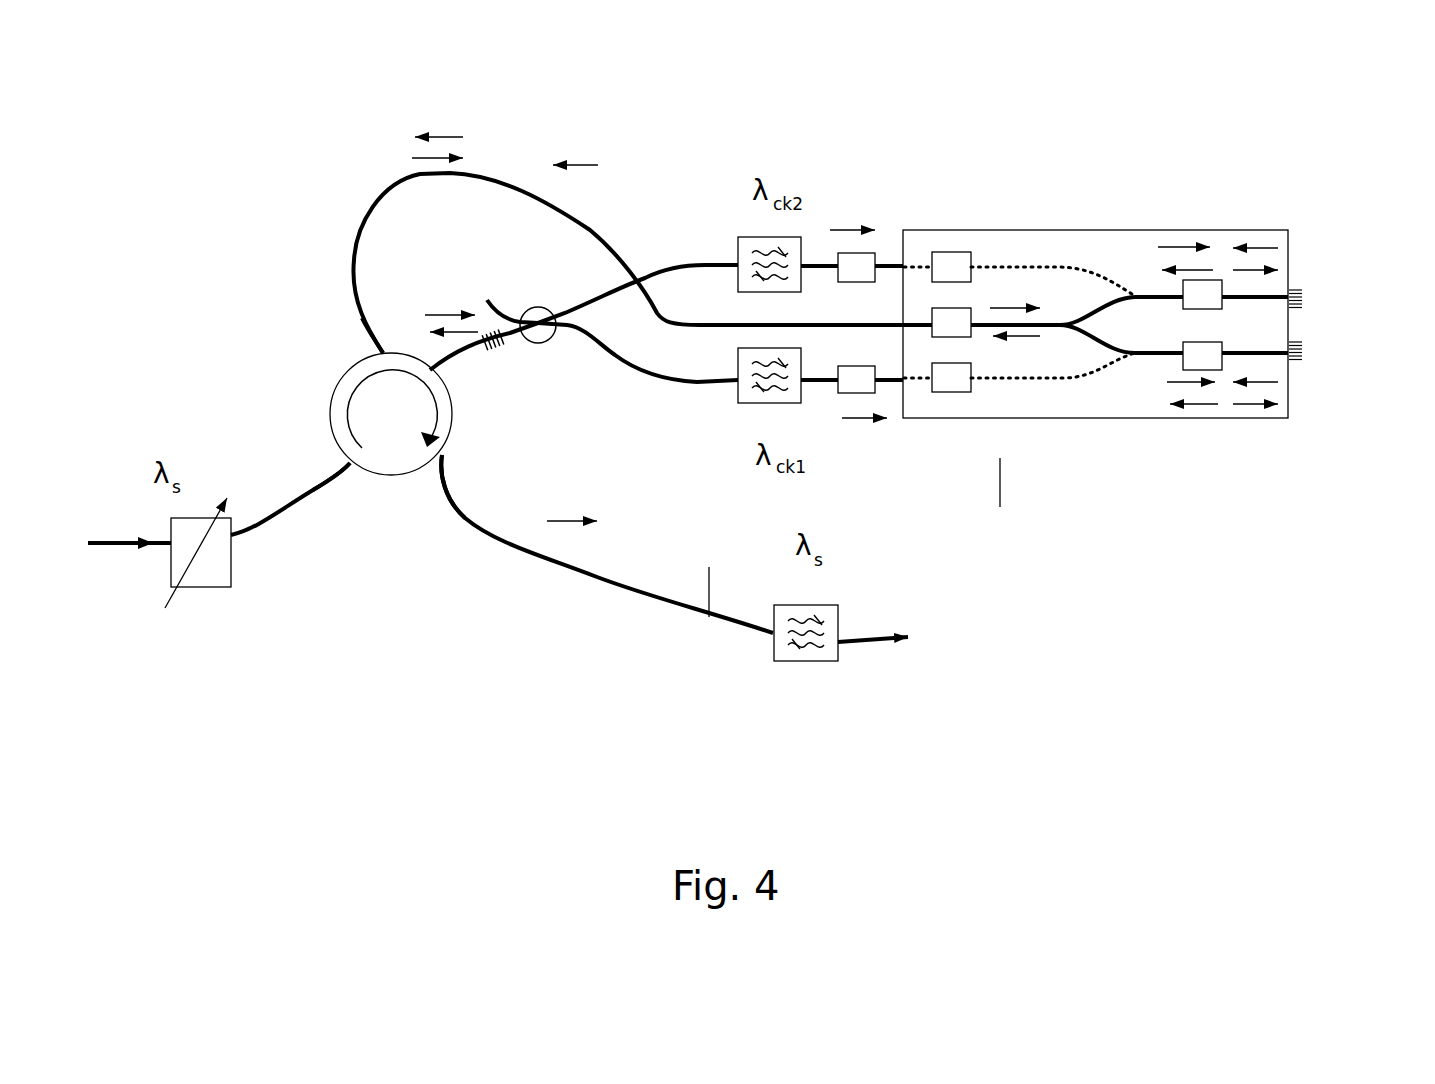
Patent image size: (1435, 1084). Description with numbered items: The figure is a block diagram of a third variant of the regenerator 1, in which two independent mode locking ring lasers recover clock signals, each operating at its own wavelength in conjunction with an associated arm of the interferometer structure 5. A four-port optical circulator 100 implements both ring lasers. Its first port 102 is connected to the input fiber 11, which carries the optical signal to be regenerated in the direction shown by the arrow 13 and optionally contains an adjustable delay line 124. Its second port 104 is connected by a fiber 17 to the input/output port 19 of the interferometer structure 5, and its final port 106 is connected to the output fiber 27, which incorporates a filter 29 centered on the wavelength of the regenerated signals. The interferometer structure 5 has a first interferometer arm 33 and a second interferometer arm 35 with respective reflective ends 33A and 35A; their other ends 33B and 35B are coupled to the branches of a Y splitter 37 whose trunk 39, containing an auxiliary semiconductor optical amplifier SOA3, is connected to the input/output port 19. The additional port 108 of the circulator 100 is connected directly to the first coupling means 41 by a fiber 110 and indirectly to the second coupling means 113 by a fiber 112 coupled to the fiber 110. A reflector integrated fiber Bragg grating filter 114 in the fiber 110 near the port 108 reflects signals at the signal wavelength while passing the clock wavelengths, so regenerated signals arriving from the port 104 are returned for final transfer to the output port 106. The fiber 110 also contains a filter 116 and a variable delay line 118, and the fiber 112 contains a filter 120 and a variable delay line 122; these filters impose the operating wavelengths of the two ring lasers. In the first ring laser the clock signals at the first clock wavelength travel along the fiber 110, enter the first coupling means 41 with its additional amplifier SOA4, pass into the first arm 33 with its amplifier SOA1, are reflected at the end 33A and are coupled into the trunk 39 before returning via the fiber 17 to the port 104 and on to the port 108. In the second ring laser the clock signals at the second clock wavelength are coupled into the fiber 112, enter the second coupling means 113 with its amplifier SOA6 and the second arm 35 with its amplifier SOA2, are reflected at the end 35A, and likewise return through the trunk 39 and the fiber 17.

The wavelength converter system 1 is at (328, 160).
The interferometer structure 5 is at (1115, 220).
The input fiber 11 is at (278, 507).
The arrow 13 is at (122, 548).
The fiber 17 is at (492, 175).
The input/output port 19 is at (900, 323).
The output fiber 27 is at (598, 579).
The filter 29 is at (813, 662).
The first interferometer arm 33 is at (1258, 354).
The reflective end 33A is at (1302, 352).
The end 33B is at (1102, 340).
The second interferometer arm 35 is at (1240, 297).
The reflective end 35A is at (1300, 296).
The end 35B is at (1090, 308).
The Y splitter 37 is at (1055, 336).
The trunk 39 is at (1022, 330).
The coupling means 41 is at (1000, 381).
The four-port optical circulator 100 is at (328, 370).
The first port 102 is at (350, 467).
The second port 104 is at (377, 350).
The final port 106 is at (443, 460).
The additional port 108 is at (432, 372).
The fiber 110 is at (655, 384).
The fiber 112 is at (600, 298).
The second coupling means 113 is at (1028, 266).
The reflector integrated fiber Bragg grating filter 114 is at (503, 338).
The filter 116 is at (790, 404).
The variable delay line 118 is at (870, 394).
The filter 120 is at (740, 240).
The variable delay line 122 is at (843, 252).
The adjustable delay line 124 is at (232, 567).
The semiconductor optical amplifier SOA1 is at (1205, 371).
The semiconductor optical amplifier SOA2 is at (1205, 280).
The auxiliary semiconductor optical amplifier SOA3 is at (950, 308).
The additional semiconductor optical amplifier SOA4 is at (955, 393).
The additional semiconductor optical amplifier SOA6 is at (948, 252).